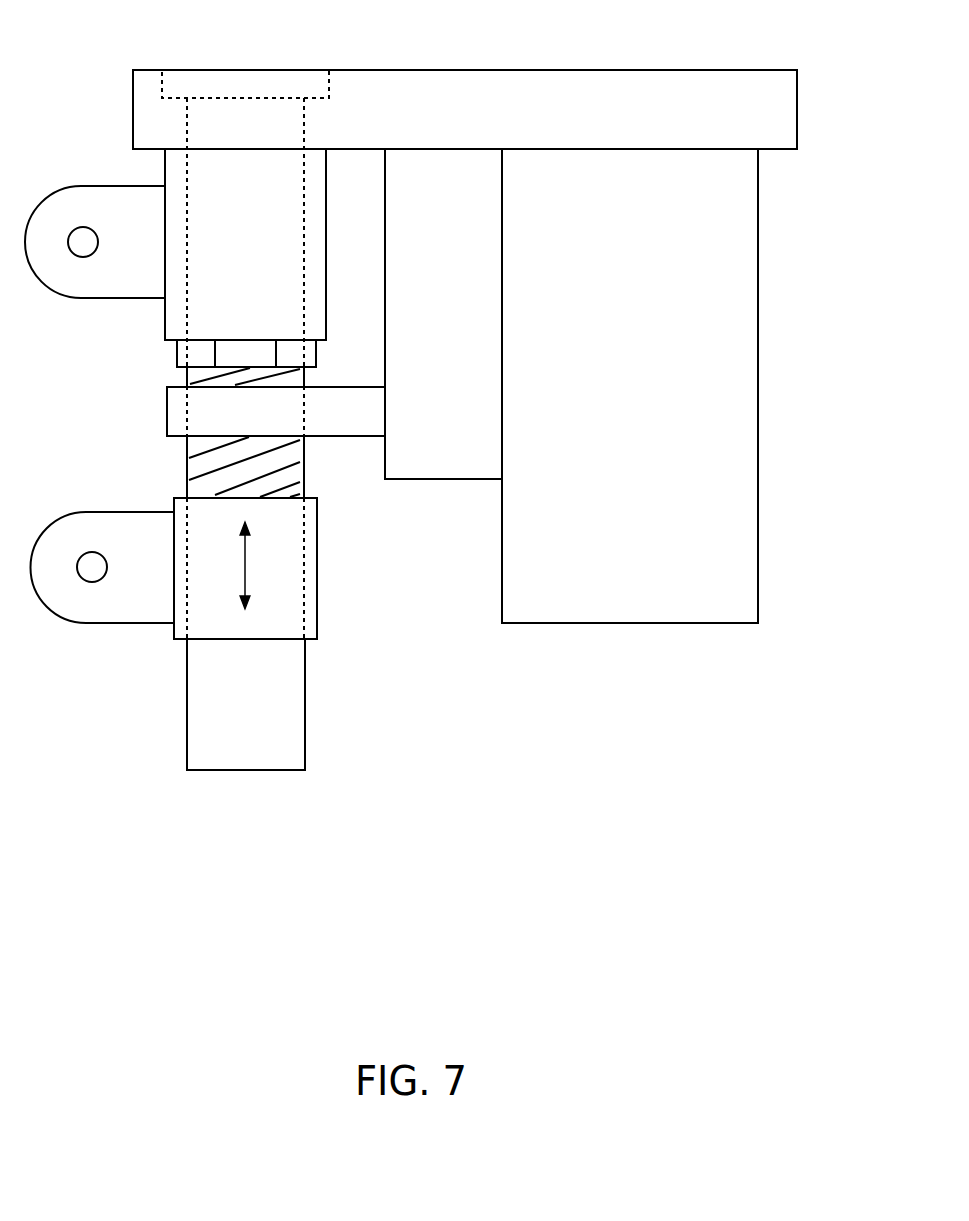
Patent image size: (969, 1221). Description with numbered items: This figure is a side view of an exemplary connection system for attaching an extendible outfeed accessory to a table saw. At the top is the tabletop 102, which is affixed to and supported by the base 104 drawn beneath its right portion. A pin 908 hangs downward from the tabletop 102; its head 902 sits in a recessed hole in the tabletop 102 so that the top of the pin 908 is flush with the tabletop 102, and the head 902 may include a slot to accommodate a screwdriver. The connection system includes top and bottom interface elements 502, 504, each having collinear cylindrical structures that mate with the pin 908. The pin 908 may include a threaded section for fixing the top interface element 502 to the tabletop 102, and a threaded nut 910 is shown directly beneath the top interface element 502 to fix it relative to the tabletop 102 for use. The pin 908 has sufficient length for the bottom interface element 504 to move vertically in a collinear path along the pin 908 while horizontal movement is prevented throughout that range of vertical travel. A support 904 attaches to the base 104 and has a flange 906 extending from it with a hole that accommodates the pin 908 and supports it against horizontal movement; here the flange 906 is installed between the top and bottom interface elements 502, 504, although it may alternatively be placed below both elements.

The tabletop 102 is at (487, 122).
The base 104 is at (568, 600).
The top interface element 502 is at (213, 185).
The bottom interface element 504 is at (212, 594).
The head 902 is at (267, 68).
The support 904 is at (448, 193).
The flange 906 is at (188, 412).
The pin 908 is at (238, 708).
The threaded nut 910 is at (177, 341).